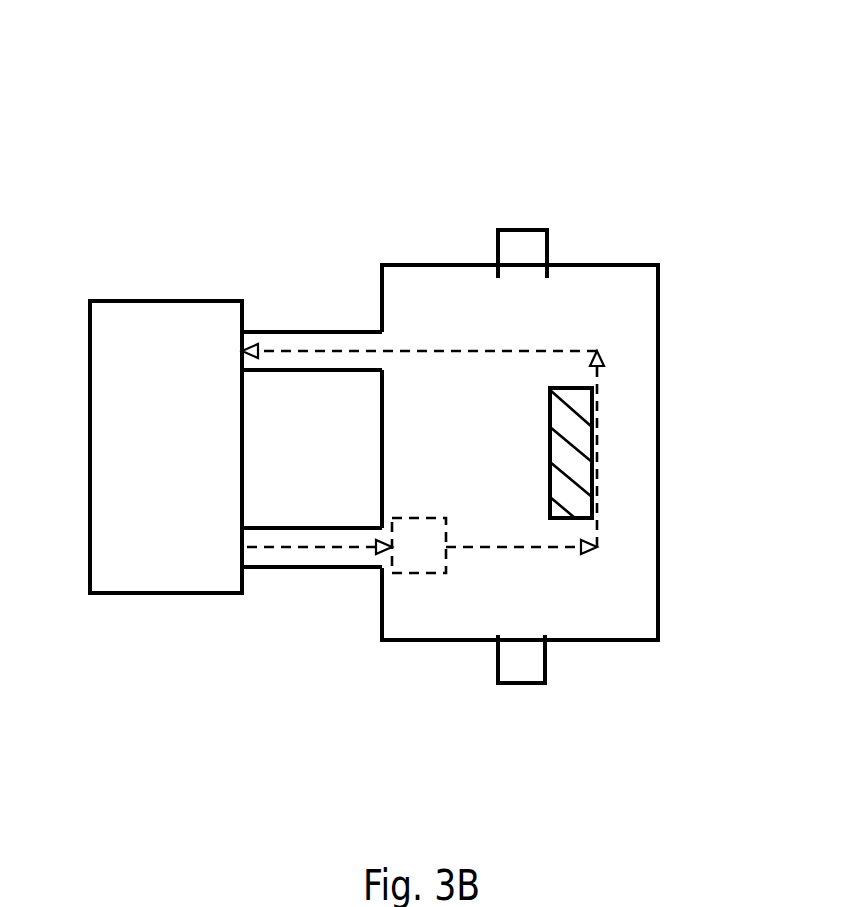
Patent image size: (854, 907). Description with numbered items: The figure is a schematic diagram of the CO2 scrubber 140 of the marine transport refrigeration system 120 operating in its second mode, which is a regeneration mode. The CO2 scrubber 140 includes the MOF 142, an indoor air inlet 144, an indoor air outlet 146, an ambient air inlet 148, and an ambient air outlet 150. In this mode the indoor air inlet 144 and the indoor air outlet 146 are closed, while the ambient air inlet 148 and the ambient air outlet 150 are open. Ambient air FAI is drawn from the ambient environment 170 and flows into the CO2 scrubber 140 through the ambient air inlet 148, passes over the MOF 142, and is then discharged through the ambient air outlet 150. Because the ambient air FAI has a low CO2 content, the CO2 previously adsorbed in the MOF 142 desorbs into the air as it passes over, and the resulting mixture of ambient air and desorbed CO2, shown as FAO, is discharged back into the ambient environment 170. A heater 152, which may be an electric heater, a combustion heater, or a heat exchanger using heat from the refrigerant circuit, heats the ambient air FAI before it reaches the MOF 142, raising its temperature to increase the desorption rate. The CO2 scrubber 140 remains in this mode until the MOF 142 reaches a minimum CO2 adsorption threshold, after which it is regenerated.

The marine transport refrigeration system 120 is at (251, 122).
The CO2 scrubber 140 is at (657, 249).
The MOF 142 is at (594, 397).
The indoor air inlet 144 is at (510, 228).
The indoor air outlet 146 is at (508, 685).
The ambient air inlet 148 is at (370, 568).
The ambient air outlet 150 is at (360, 330).
The heater 152 is at (413, 577).
The ambient environment 170 is at (135, 595).
The ambient air containing desorbed CO2 FAO is at (297, 350).
The ambient air FAI is at (278, 548).